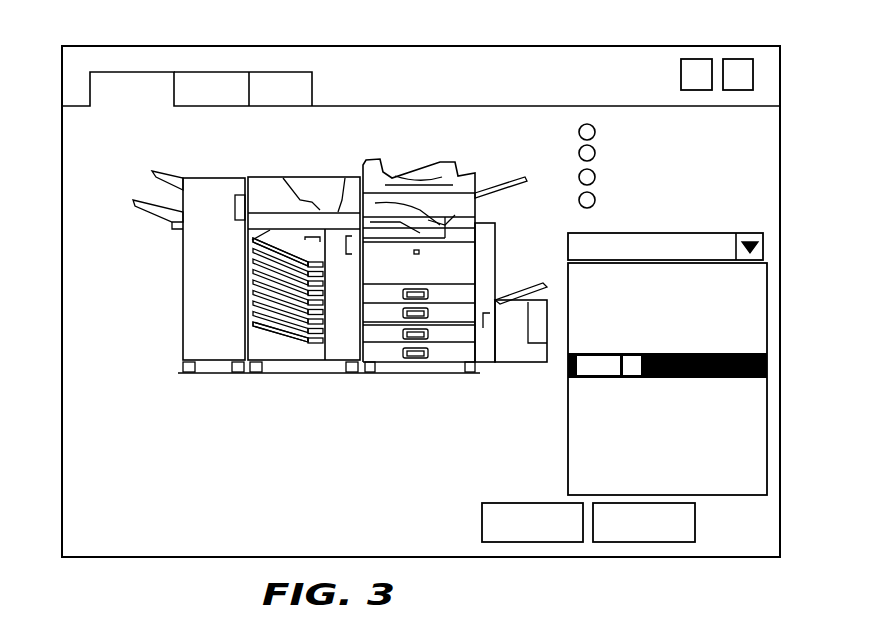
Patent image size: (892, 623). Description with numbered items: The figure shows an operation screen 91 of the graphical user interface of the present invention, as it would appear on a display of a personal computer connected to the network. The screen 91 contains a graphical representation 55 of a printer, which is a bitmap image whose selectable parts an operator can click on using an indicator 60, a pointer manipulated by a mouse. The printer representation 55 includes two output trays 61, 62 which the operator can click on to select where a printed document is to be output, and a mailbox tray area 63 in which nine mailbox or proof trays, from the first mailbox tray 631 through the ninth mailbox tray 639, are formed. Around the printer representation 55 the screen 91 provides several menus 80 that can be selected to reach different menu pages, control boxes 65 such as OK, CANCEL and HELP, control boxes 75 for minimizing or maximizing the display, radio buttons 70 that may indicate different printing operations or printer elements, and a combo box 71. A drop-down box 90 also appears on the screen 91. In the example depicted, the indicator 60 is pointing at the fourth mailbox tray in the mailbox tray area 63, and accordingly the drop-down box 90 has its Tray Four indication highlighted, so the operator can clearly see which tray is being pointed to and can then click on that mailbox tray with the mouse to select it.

The graphical representation of a printer 55 is at (183, 326).
The indicator 60 is at (283, 297).
The output tray 61 is at (172, 177).
The output tray 62 is at (134, 205).
The mailbox tray area 63 is at (299, 352).
The mailbox tray 631 is at (252, 241).
The mailbox tray 639 is at (253, 316).
The control boxes 65 is at (617, 543).
The radio buttons 70 is at (600, 152).
The combo box 71 is at (700, 232).
The control boxes 75 is at (735, 58).
The menus 80 is at (130, 86).
The drop-down box 90 is at (767, 412).
The screen 91 is at (780, 170).